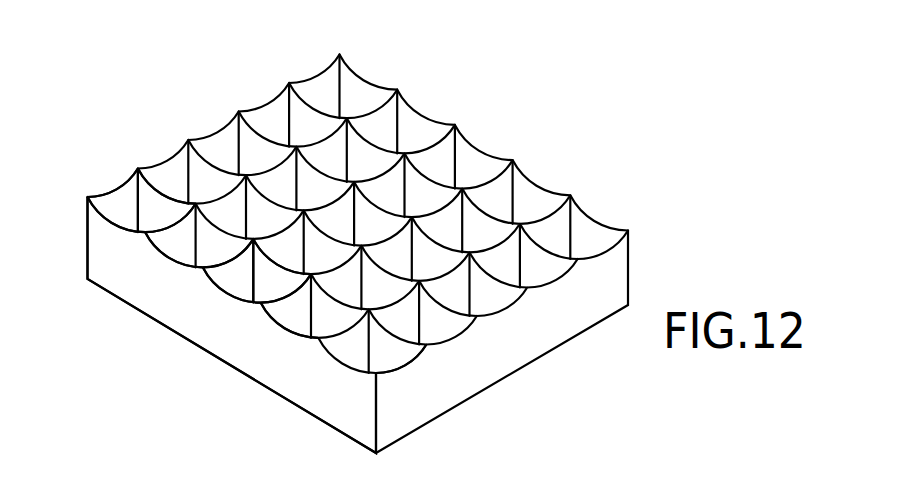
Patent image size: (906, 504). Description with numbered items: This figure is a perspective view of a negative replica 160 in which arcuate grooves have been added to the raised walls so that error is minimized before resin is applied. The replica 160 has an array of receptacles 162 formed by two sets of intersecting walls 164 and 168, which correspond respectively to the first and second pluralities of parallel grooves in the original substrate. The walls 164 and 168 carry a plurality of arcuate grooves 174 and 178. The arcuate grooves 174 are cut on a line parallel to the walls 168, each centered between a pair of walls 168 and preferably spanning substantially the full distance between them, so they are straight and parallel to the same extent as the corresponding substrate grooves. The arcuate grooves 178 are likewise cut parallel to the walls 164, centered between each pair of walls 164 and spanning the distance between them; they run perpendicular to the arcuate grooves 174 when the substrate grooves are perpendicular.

The negative replica 160 is at (460, 98).
The receptacles 162 is at (250, 290).
The walls 164 is at (170, 265).
The walls 168 is at (163, 202).
The arcuate grooves 174 is at (397, 370).
The arcuate grooves 178 is at (287, 335).